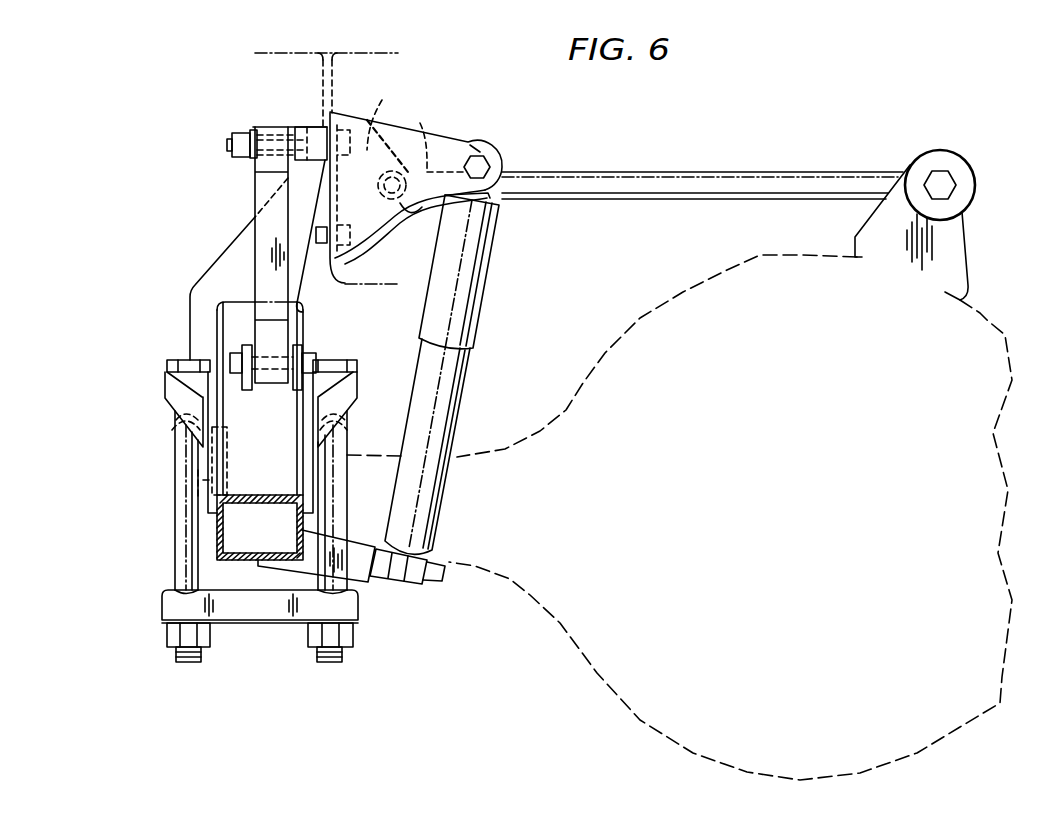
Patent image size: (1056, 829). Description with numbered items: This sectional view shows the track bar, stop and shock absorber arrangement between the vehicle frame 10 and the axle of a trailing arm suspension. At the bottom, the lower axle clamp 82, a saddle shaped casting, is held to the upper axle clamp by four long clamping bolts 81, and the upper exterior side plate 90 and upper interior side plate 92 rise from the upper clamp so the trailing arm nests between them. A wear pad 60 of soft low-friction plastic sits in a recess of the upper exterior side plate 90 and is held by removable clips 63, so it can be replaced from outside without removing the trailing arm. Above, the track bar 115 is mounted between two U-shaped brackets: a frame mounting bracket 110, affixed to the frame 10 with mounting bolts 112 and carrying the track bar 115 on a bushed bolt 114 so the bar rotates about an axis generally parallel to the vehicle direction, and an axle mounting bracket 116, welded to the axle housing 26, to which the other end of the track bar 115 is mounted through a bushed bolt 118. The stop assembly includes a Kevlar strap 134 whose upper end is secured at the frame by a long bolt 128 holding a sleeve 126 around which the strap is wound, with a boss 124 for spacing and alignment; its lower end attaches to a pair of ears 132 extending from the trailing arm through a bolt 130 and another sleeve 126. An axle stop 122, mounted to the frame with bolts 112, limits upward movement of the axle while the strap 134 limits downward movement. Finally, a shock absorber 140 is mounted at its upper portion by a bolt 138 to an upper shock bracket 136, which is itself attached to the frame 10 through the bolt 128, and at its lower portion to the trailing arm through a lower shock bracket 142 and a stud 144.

The frame 10 is at (398, 50).
The axle housing 26 is at (990, 315).
The wear pad 60 is at (185, 446).
The removable clips 63 is at (198, 488).
The clamping bolts 81 is at (168, 362).
The lower axle clamp 82 is at (243, 607).
The upper exterior side plate 90 is at (207, 473).
The upper interior side plate 92 is at (310, 457).
The frame mounting bracket 110 is at (385, 99).
The mounting bolts 112 is at (372, 257).
The bushed bolt 114 is at (428, 122).
The track bar 115 is at (716, 173).
The axle mounting bracket 116 is at (945, 245).
The bushed bolt 118 is at (944, 181).
The axle stop 122 is at (313, 295).
The boss 124 is at (303, 128).
The sleeve 126 is at (273, 130).
The long bolt 128 is at (233, 143).
The bolt 130 is at (238, 378).
The ears 132 is at (245, 348).
The strap 134 is at (263, 232).
The upper shock bracket 136 is at (453, 155).
The bolt 138 is at (490, 168).
The shock absorber 140 is at (487, 257).
The lower shock bracket 142 is at (353, 568).
The stud 144 is at (447, 577).